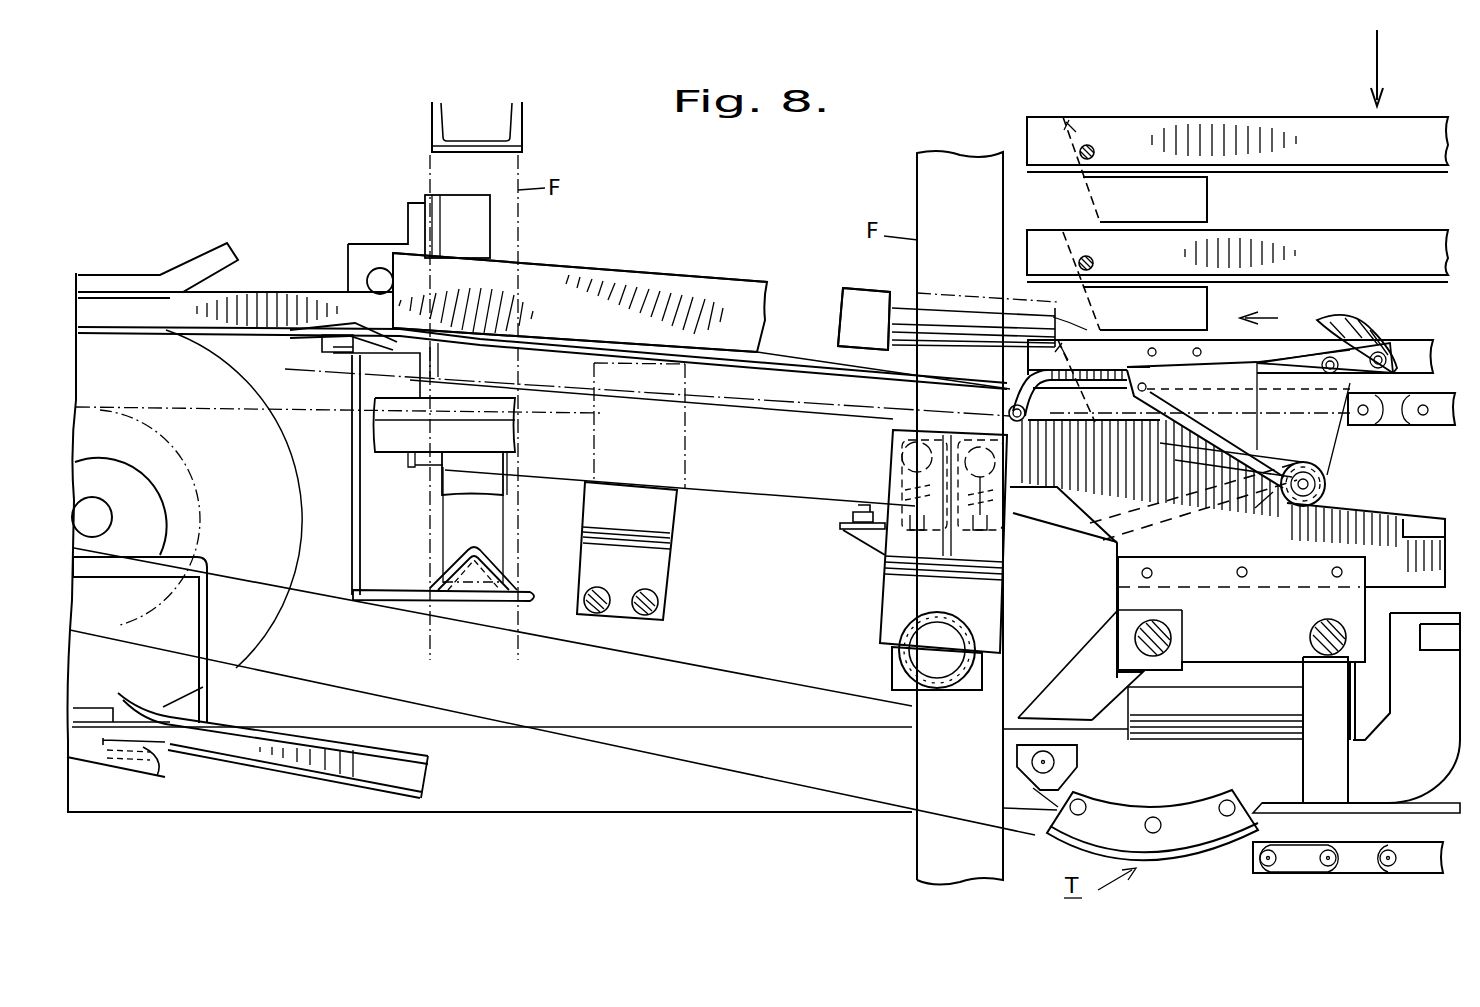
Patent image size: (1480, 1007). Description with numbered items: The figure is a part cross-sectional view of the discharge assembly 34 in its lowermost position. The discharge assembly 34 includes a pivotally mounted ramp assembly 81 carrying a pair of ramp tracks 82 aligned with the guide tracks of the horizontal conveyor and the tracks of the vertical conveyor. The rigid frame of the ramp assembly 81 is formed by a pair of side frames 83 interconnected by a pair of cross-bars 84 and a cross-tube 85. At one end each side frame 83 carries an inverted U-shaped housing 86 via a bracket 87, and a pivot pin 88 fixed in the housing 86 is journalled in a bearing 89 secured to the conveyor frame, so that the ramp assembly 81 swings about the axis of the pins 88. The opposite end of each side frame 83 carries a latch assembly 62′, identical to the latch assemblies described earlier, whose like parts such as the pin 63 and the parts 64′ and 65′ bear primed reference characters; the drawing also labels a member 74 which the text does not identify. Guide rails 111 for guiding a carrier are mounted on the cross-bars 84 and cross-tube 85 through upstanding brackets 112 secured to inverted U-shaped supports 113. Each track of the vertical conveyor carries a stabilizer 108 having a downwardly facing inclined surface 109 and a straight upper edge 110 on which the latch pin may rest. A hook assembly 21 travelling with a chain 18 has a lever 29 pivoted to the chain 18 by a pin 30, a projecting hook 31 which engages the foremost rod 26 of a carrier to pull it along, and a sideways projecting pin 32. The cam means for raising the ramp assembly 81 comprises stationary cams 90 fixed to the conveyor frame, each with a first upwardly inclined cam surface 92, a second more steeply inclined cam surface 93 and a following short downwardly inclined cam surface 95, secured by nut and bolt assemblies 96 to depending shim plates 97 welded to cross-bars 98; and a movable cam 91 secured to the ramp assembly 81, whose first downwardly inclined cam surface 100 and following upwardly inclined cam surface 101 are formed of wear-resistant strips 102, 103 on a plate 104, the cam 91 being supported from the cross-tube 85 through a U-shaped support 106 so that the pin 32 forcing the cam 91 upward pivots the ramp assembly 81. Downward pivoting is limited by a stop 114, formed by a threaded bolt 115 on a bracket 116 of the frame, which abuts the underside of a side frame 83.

The bearing 89 is at (406, 216).
The inverted U-shaped housing 86 is at (350, 257).
The pivot pin 88 is at (394, 280).
The guide rail 111 is at (298, 358).
The bracket 87 is at (352, 358).
The ramp assembly 81 is at (586, 258).
The ramp track 82 is at (628, 285).
The discharge assembly 34 is at (733, 264).
The latch assembly 62′ is at (828, 304).
The pin 63 is at (868, 298).
The rod 64′ is at (938, 320).
The rod 26 is at (1096, 152).
The stabilizer 108 is at (1207, 201).
The inclined surface 109 is at (1097, 205).
The straight upper edge 110 is at (1070, 125).
The member 65′ is at (1090, 336).
The hook 31 is at (1368, 330).
The lever 29 is at (1097, 378).
The short downwardly inclined cam surface 95 is at (1008, 411).
The pin 30 is at (1027, 413).
The arm 74 is at (1150, 414).
The second more steeply inclined cam surface 93 is at (1218, 458).
The movable cam 91 is at (1263, 462).
The hook assembly 21 is at (1328, 453).
The chain 18 is at (1438, 426).
The pin 32 is at (1327, 487).
The first upwardly inclined cam surface 92 is at (1392, 520).
The stationary cam 90 is at (1450, 553).
The first downwardly inclined cam surface 100 is at (1257, 513).
The wear-resistant strip 102 is at (1160, 532).
The upstanding bracket 112 is at (672, 524).
The inverted U-shaped support 113 is at (660, 565).
The cross-bar 84 is at (642, 632).
The side frame 83 is at (775, 490).
The threaded bolt 115 is at (852, 512).
The stop 114 is at (832, 540).
The bracket 116 is at (850, 550).
The U-shaped support 106 is at (884, 593).
The cross-tube 85 is at (900, 661).
The upwardly inclined cam surface 101 is at (1223, 680).
The plate 104 is at (1062, 512).
The wear-resistant strip 103 is at (1088, 527).
The shim plate 97 is at (1130, 598).
The nut and bolt assembly 96 is at (1152, 576).
The cross-bar 98 is at (1308, 636).